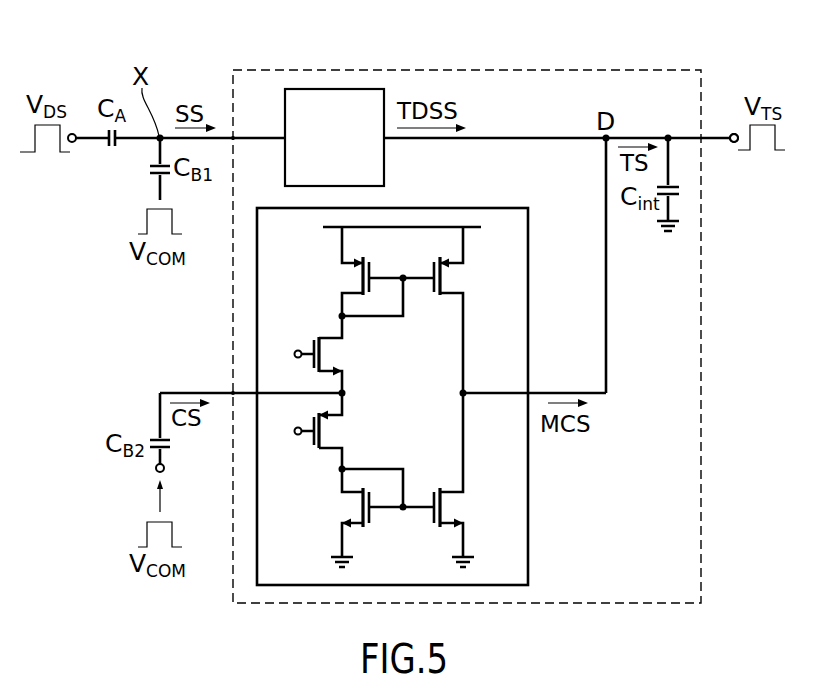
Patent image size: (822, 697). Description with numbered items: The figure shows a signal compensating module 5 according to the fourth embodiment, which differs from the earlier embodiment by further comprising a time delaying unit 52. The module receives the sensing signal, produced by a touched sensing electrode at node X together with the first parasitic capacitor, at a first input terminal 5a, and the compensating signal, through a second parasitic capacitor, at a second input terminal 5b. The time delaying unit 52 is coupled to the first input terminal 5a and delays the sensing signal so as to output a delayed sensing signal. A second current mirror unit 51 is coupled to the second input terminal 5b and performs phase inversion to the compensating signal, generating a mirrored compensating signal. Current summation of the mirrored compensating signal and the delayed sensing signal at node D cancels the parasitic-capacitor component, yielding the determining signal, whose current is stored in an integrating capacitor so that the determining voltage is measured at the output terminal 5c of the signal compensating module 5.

The signal compensating module 5 is at (635, 70).
The first input terminal 5a is at (233, 136).
The second input terminal 5b is at (233, 391).
The output terminal 5c is at (730, 134).
The second current mirror unit 51 is at (528, 535).
The time delaying unit 52 is at (384, 155).